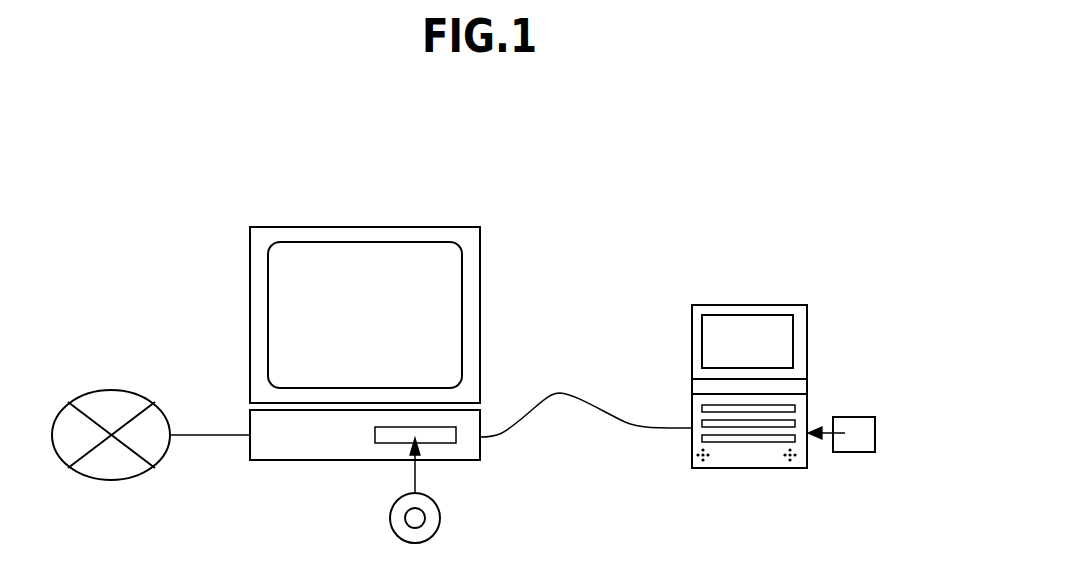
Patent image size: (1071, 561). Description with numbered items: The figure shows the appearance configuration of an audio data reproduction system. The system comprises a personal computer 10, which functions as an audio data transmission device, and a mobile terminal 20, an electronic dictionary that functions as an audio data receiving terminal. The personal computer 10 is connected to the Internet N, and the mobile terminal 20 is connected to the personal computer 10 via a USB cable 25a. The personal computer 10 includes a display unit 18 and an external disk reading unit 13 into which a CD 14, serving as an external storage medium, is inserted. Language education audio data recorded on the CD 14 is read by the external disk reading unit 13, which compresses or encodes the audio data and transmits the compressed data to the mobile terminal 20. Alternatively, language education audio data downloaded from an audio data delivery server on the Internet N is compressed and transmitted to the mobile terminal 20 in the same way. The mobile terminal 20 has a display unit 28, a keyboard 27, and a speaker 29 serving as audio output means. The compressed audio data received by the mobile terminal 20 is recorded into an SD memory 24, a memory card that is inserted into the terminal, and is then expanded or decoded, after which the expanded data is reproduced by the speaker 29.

The personal computer 10 is at (396, 327).
The display unit 18 is at (445, 286).
The external disk reading unit 13 is at (450, 438).
The CD 14 is at (440, 515).
The USB cable 25a is at (563, 393).
The mobile terminal 20 is at (791, 368).
The display unit 28 is at (786, 340).
The keyboard 27 is at (758, 458).
The speaker 29 is at (697, 460).
The SD memory 24 is at (862, 445).
The Internet N is at (112, 480).